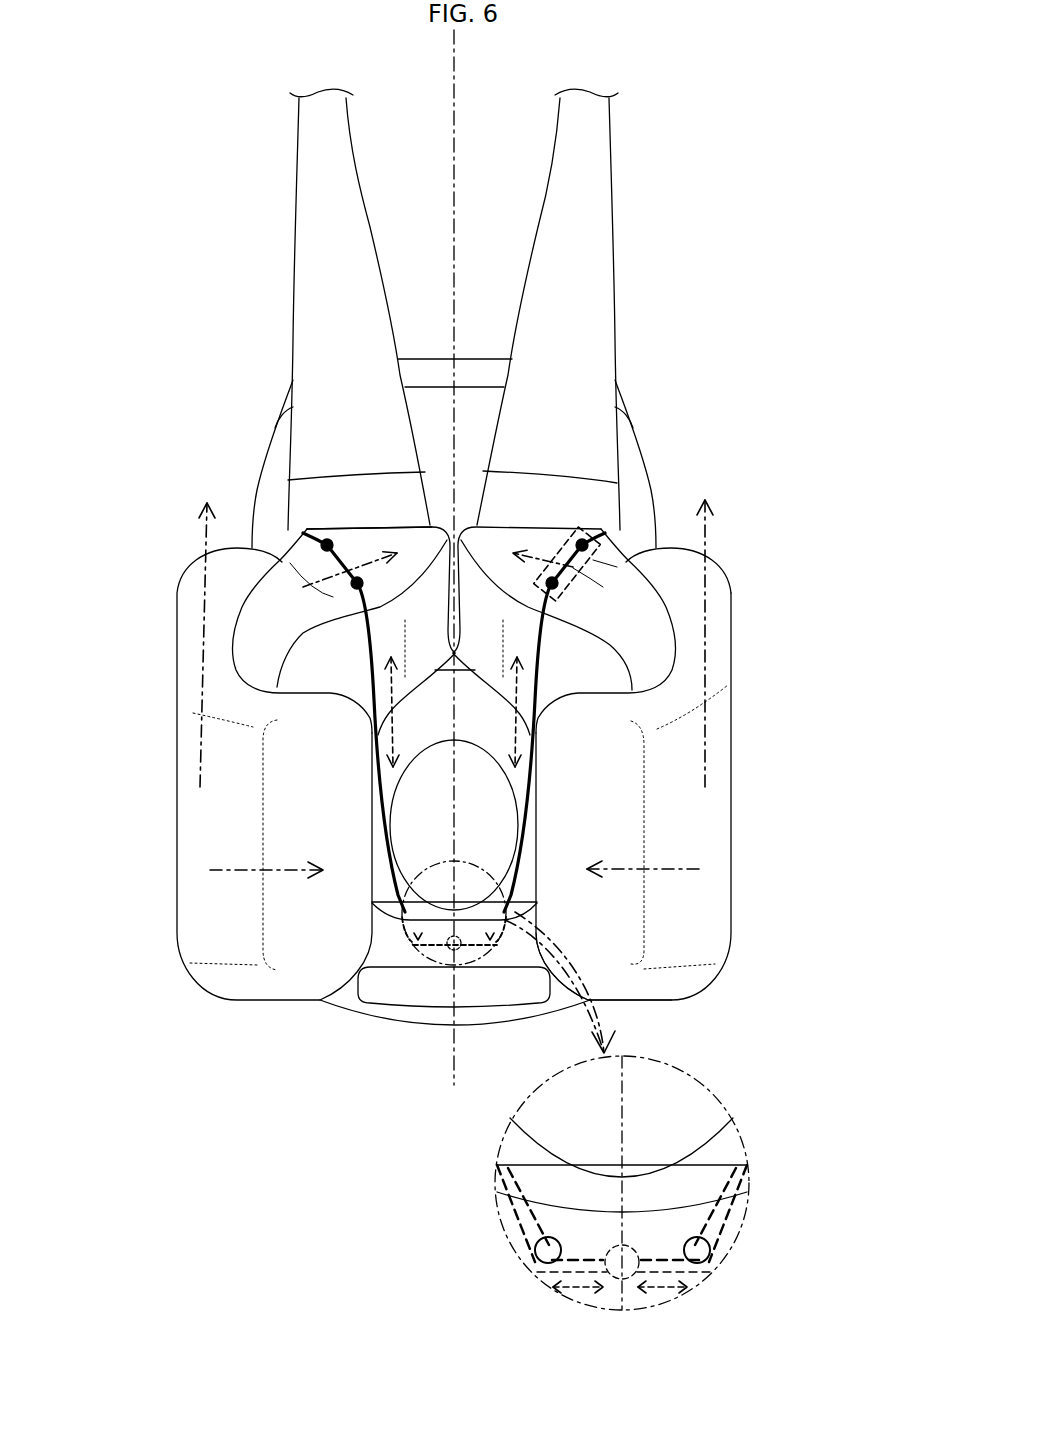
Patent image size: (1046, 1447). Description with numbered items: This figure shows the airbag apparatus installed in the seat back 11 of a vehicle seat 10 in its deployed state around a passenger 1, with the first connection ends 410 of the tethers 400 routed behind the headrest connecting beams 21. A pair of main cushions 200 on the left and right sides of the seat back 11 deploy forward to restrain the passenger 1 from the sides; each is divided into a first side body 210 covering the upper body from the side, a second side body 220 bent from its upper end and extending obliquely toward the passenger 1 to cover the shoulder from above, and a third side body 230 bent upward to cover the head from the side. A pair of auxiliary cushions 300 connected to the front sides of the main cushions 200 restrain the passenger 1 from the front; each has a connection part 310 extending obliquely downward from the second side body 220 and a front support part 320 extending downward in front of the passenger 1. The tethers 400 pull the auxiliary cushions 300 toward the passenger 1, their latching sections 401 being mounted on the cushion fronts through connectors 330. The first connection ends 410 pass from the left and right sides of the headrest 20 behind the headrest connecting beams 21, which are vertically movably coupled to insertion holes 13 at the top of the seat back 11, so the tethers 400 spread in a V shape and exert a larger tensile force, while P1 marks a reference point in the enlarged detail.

The passenger 1 is at (318, 326).
The vehicle seat 10 is at (650, 487).
The seat back 11 is at (347, 1003).
The insertion holes 13 is at (688, 1247).
The headrest 20 is at (410, 1000).
The headrest connecting beams 21 is at (534, 1253).
The main cushions 200 is at (700, 913).
The first side body 210 is at (686, 568).
The second side body 220 is at (699, 855).
The third side body 230 is at (594, 910).
The auxiliary cushions 300 is at (267, 628).
The connection part 310 is at (253, 655).
The front support part 320 is at (372, 495).
The connector 330 is at (337, 527).
The tethers 400 is at (540, 690).
The latching section 401 is at (607, 596).
The first connection ends 410 is at (383, 880).
The rotation point P1 is at (617, 1267).